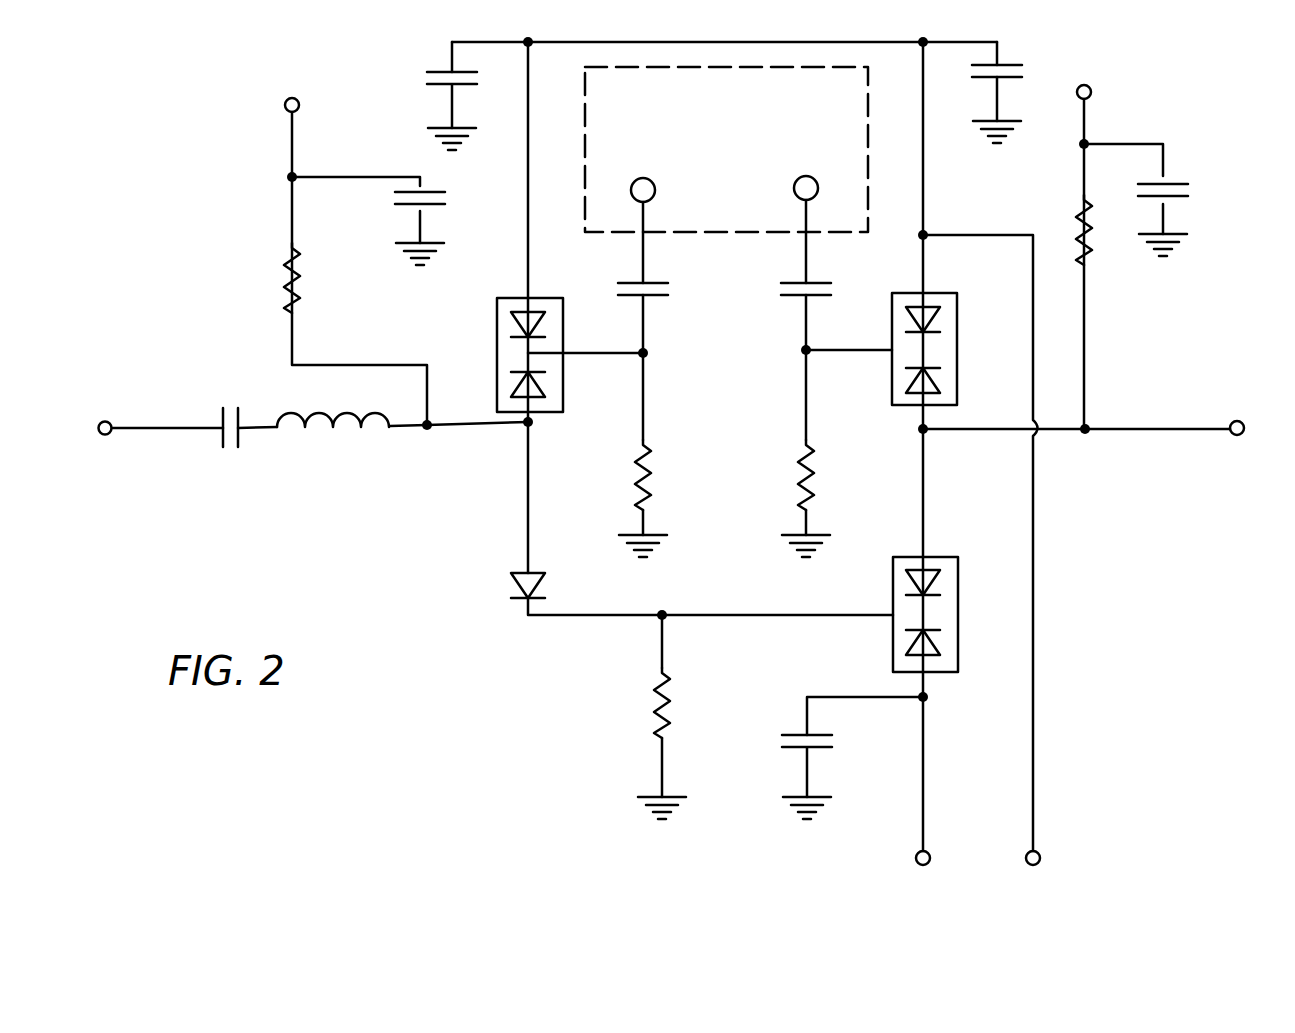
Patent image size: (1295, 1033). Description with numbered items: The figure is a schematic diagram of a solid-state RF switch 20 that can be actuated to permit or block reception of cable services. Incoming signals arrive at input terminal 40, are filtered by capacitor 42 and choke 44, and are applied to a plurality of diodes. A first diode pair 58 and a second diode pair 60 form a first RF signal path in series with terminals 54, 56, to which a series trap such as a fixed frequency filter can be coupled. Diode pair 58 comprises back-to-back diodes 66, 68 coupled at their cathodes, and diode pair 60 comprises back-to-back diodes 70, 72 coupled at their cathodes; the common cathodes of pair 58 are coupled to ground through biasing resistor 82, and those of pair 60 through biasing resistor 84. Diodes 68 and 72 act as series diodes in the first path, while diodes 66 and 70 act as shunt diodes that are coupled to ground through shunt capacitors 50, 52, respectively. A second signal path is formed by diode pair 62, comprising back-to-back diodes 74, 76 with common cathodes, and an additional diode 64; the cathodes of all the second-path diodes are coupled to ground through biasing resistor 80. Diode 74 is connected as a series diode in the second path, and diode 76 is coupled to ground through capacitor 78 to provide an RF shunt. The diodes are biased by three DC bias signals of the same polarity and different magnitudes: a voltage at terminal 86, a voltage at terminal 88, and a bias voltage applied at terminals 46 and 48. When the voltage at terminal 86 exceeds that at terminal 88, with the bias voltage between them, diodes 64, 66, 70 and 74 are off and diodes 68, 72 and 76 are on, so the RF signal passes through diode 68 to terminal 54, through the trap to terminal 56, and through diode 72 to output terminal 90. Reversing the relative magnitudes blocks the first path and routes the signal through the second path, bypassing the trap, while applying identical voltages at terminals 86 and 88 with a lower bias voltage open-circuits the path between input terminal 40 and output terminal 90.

The RF switch 20 is at (548, 656).
The input terminal 40 is at (107, 436).
The capacitor 42 is at (240, 440).
The choke 44 is at (322, 430).
The terminal 46 is at (286, 96).
The terminal 48 is at (1088, 84).
The shunt capacitor 50 is at (437, 70).
The shunt capacitor 52 is at (1015, 68).
The terminal 54 is at (655, 180).
The terminal 56 is at (798, 178).
The first diode pair 58 is at (501, 349).
The second diode pair 60 is at (950, 344).
The diode pair 62 is at (950, 588).
The additional diode 64 is at (520, 582).
The diode 66 is at (512, 320).
The diode 68 is at (512, 392).
The diode 70 is at (940, 318).
The diode 72 is at (935, 380).
The diode 74 is at (940, 580).
The diode 76 is at (944, 652).
The capacitor 78 is at (822, 752).
The biasing resistor 80 is at (670, 698).
The biasing resistor 82 is at (655, 490).
The biasing resistor 84 is at (815, 490).
The terminal 86 is at (931, 852).
The terminal 88 is at (1041, 852).
The output terminal 90 is at (1238, 436).